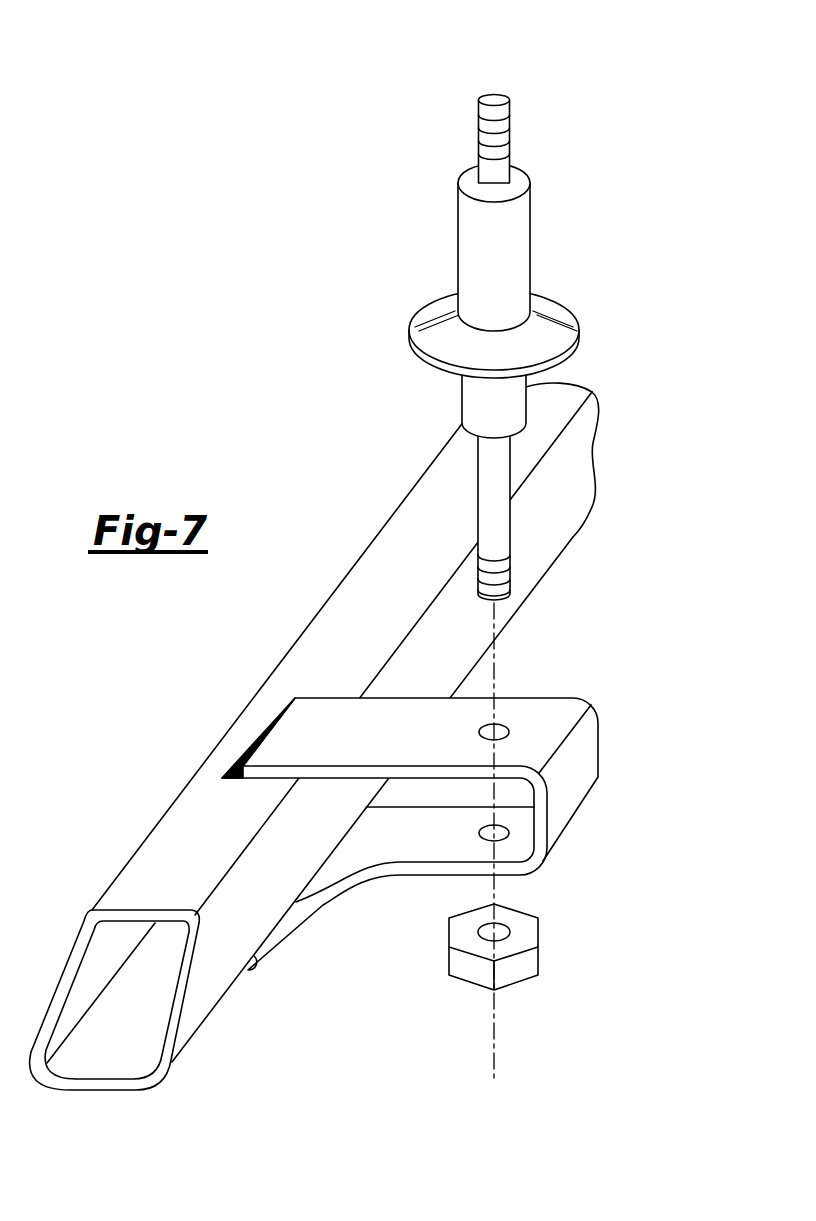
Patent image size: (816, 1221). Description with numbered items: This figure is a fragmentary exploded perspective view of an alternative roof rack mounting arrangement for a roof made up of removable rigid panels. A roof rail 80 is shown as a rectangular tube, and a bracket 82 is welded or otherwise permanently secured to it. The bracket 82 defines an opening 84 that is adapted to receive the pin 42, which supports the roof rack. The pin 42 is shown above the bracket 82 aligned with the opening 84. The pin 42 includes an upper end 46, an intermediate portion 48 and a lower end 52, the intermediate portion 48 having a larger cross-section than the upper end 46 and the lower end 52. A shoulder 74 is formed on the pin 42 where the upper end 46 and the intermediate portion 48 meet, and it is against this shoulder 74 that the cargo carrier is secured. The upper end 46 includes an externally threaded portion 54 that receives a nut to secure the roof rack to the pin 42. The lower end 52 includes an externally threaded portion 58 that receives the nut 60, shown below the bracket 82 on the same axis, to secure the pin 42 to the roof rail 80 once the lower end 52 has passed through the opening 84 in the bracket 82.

The pin 42 is at (487, 317).
The upper end 46 is at (495, 97).
The externally threaded portion 54 is at (538, 97).
The shoulder 74 is at (520, 182).
The intermediate portion 48 is at (532, 231).
The lower end 52 is at (547, 523).
The externally threaded portion 58 is at (500, 568).
The roof rail 80 is at (376, 522).
The bracket 82 is at (590, 758).
The opening 84 is at (498, 732).
The nut 60 is at (540, 960).